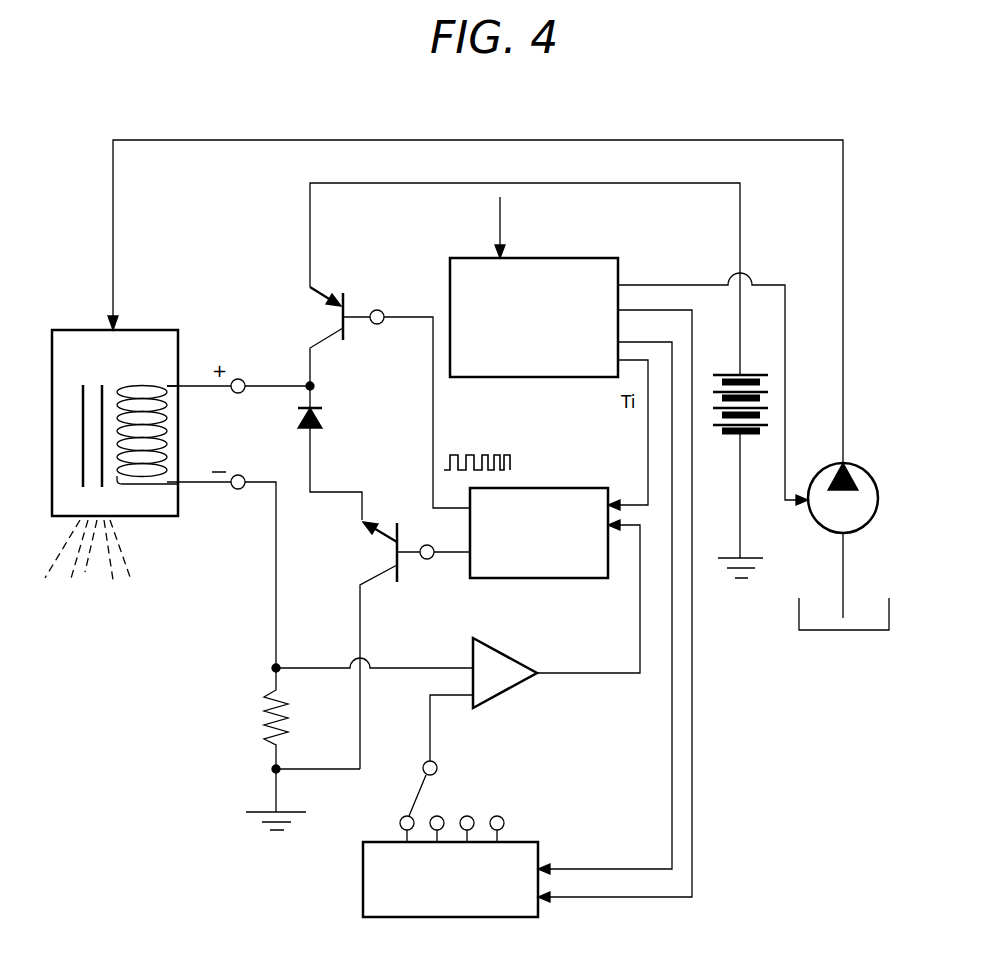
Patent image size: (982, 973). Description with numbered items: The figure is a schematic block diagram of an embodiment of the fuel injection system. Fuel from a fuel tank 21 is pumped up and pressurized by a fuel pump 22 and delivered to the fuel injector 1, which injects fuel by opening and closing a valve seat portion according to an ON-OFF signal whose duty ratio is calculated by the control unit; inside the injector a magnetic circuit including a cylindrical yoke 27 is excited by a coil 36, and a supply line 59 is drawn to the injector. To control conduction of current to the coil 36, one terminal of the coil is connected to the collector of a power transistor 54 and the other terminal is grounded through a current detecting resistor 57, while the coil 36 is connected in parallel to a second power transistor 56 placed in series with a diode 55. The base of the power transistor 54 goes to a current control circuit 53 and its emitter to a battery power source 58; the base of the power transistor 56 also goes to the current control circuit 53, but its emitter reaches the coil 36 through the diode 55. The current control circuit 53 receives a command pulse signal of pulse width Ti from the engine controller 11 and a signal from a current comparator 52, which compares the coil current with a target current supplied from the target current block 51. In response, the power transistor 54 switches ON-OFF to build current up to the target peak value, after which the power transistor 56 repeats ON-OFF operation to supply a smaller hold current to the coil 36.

The fuel injector 1 is at (116, 424).
The cylindrical yoke 27 is at (86, 380).
The coil 36 is at (134, 380).
The engine controller 11 is at (623, 270).
The fuel tank 21 is at (889, 600).
The fuel pump 22 is at (868, 468).
The target current setting section 51 is at (526, 842).
The current comparator 52 is at (510, 652).
The current control circuit 53 is at (534, 488).
The power transistor 54 is at (312, 318).
The diode 55 is at (326, 418).
The power transistor 56 is at (366, 567).
The current detecting resistor 57 is at (255, 716).
The battery power source 58 is at (745, 372).
The power supply line 59 is at (843, 258).